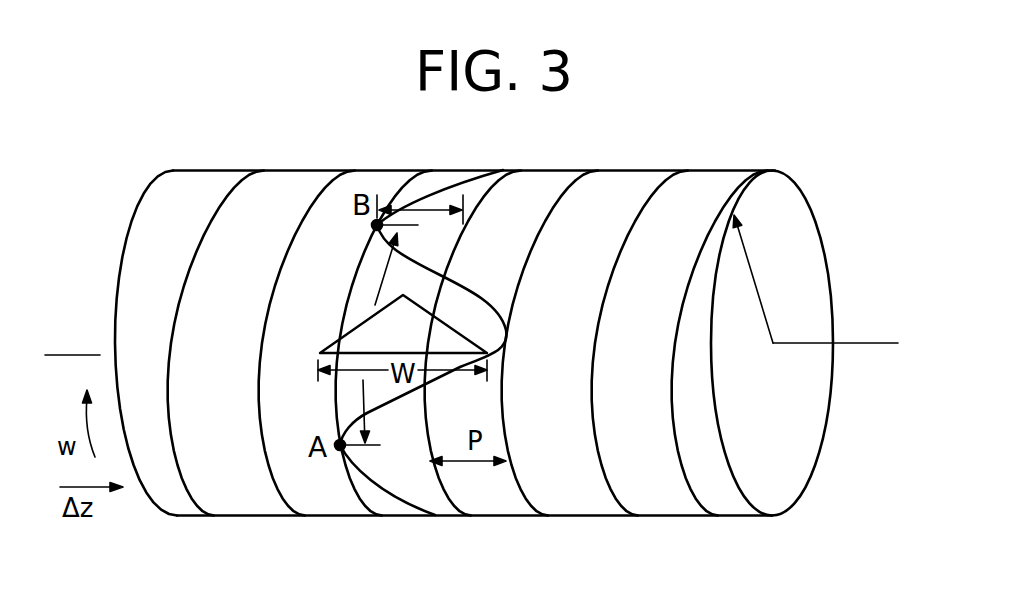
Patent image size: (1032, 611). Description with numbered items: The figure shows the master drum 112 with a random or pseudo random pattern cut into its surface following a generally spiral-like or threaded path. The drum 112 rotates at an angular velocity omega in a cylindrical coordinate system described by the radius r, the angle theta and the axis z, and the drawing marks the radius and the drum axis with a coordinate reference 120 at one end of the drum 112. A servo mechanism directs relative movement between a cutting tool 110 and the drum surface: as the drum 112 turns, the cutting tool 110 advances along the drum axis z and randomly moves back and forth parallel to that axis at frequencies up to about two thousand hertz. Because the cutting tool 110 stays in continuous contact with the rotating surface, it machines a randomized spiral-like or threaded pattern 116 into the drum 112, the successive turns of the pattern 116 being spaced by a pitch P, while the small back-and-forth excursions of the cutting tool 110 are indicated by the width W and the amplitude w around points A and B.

The cutting tool 110 is at (445, 333).
The drum 112 is at (267, 517).
The randomized spiral-like or threaded pattern 116 is at (297, 223).
The longitudinal axis coordinate system 120 is at (862, 345).